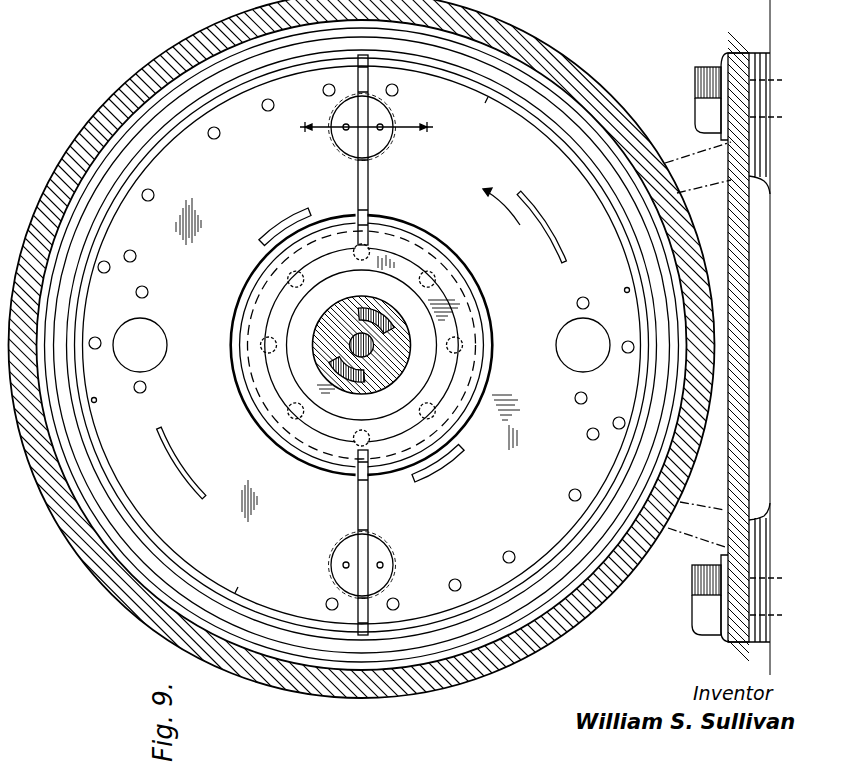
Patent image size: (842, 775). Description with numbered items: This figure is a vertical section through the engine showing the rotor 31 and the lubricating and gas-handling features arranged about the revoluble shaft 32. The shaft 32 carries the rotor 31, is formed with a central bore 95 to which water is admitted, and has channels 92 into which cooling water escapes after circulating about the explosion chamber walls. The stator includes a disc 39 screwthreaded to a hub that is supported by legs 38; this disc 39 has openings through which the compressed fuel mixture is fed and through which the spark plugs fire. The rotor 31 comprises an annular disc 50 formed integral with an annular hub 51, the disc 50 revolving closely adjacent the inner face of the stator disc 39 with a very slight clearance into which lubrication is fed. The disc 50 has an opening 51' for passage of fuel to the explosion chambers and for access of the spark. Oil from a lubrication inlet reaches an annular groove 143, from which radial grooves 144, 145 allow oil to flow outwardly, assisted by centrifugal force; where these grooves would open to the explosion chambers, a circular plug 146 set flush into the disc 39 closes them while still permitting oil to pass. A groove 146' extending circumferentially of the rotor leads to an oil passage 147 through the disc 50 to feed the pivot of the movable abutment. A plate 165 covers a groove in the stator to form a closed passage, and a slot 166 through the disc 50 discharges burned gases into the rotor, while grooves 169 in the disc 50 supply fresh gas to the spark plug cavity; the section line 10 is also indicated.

The disc 39 is at (127, 95).
The rotor 31 is at (242, 100).
The annular disc 50 is at (487, 593).
The oil passage 147 is at (94, 400).
The groove 146' is at (364, 345).
The annular hub 51 is at (369, 345).
The opening 51' is at (361, 334).
The annular groove 143 is at (274, 306).
The central bore 95 is at (358, 342).
The revoluble shaft 32 is at (345, 311).
The channels 92 is at (354, 376).
The radial groove 144 is at (368, 178).
The radial groove 145 is at (368, 502).
The circular plug 146 is at (347, 340).
The section line 10- 10 is at (365, 134).
The plate 165 is at (287, 213).
The slot 166 is at (452, 460).
The grooves 169 is at (553, 240).
The legs 38 is at (668, 163).